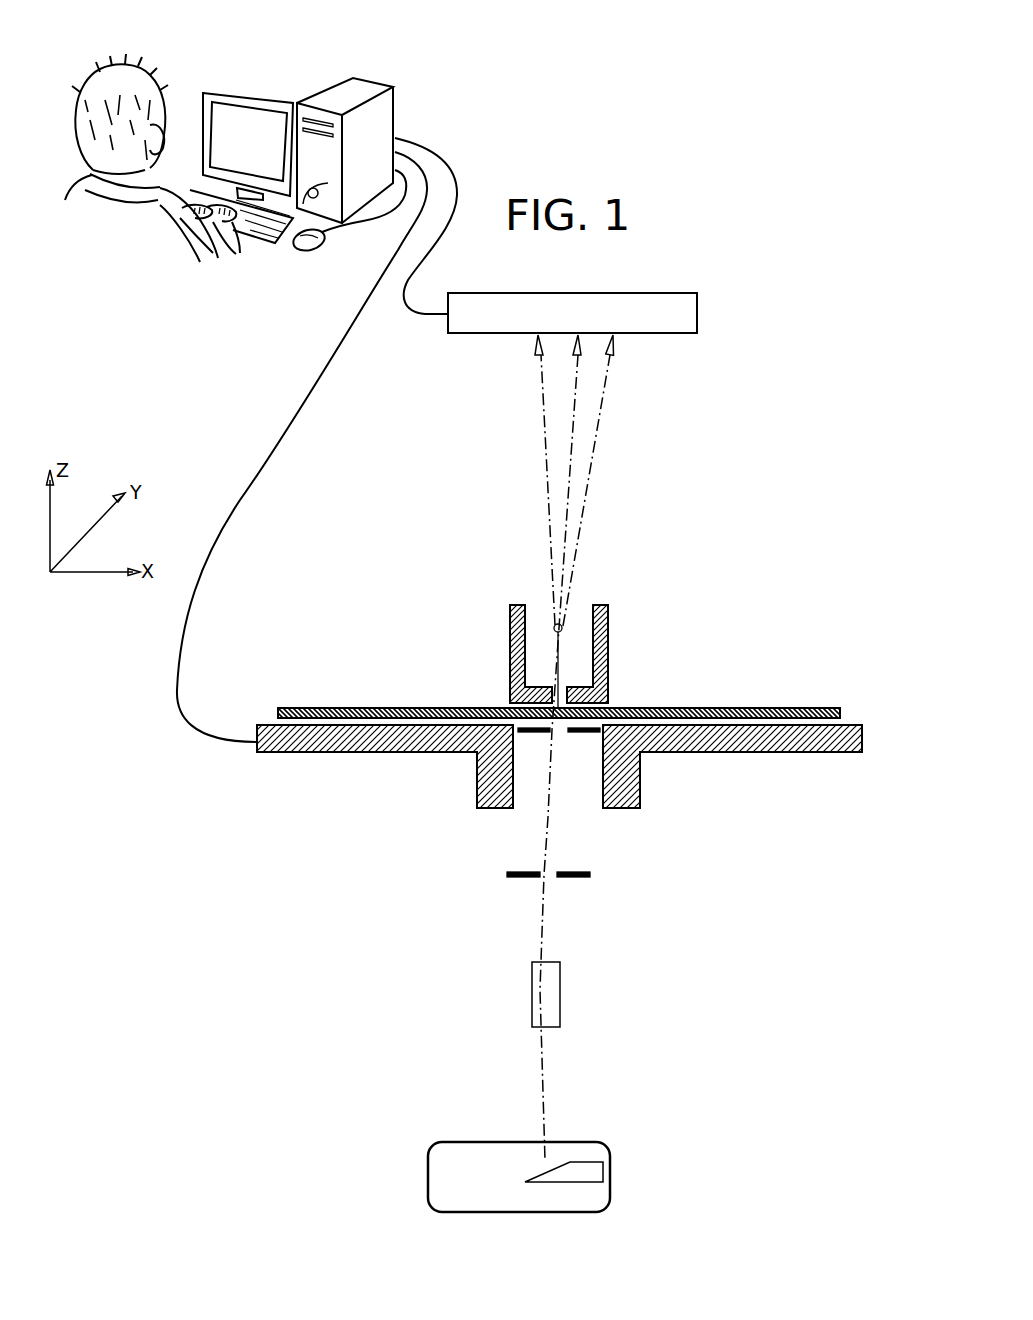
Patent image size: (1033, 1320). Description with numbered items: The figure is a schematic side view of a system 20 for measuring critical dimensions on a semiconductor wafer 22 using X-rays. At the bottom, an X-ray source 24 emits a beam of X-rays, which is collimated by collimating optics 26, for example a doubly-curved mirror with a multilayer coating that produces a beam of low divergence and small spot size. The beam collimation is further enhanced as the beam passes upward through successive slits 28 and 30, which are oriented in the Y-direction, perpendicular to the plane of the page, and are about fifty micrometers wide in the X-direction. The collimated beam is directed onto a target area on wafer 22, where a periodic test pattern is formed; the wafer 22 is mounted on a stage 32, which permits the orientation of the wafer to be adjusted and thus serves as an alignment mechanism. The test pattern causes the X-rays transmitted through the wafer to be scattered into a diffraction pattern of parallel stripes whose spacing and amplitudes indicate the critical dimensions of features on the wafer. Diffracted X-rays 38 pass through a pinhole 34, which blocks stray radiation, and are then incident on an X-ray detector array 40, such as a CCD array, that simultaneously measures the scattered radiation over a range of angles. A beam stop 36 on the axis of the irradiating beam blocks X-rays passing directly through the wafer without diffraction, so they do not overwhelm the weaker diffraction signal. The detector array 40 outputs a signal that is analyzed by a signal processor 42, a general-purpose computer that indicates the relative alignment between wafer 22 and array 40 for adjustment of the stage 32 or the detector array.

The system 20 is at (825, 278).
The semiconductor wafer 22 is at (837, 710).
The X-ray source 24 is at (610, 1175).
The collimating optics 26 is at (560, 988).
The slit 28 is at (527, 871).
The slit 30 is at (528, 733).
The stage 32 is at (863, 742).
The pinhole 34 is at (608, 652).
The beam stop 36 is at (555, 625).
The X-rays 38 is at (542, 473).
The X-ray detector array 40 is at (697, 312).
The signal processor 42 is at (338, 99).